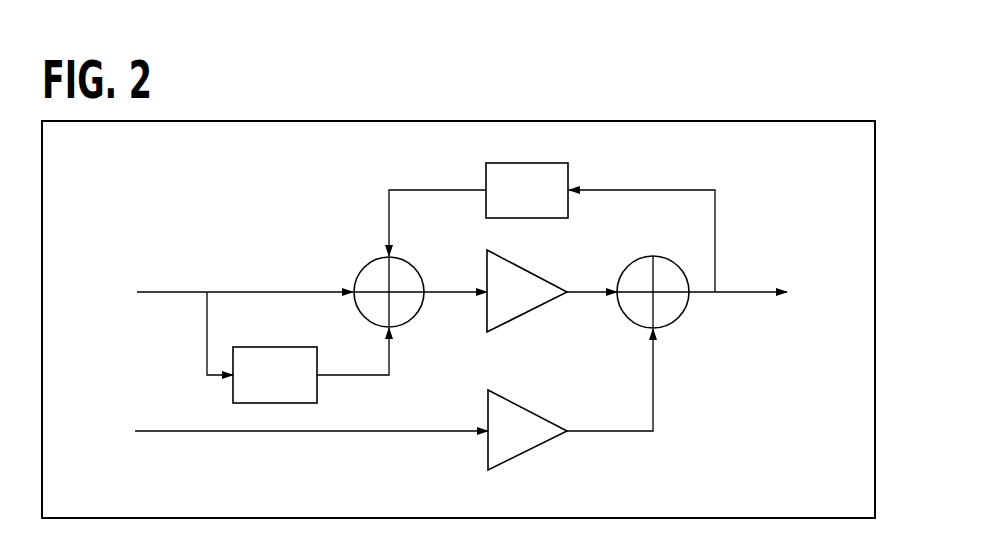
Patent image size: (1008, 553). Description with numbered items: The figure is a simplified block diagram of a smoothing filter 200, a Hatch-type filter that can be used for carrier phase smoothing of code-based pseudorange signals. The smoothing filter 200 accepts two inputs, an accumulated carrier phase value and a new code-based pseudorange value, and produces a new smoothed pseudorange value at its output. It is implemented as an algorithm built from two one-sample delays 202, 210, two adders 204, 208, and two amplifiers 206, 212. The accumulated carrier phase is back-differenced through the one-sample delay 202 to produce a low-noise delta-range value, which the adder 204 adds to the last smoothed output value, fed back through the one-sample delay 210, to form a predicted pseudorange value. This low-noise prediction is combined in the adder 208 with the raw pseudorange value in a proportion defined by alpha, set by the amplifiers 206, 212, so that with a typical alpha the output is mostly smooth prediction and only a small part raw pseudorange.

The smoothing filter 200 is at (778, 82).
The one-sample delay 202 is at (260, 347).
The adder 204 is at (414, 326).
The amplifier 206 is at (520, 315).
The adder 208 is at (677, 318).
The one-sample delay 210 is at (558, 218).
The amplifier 212 is at (522, 452).